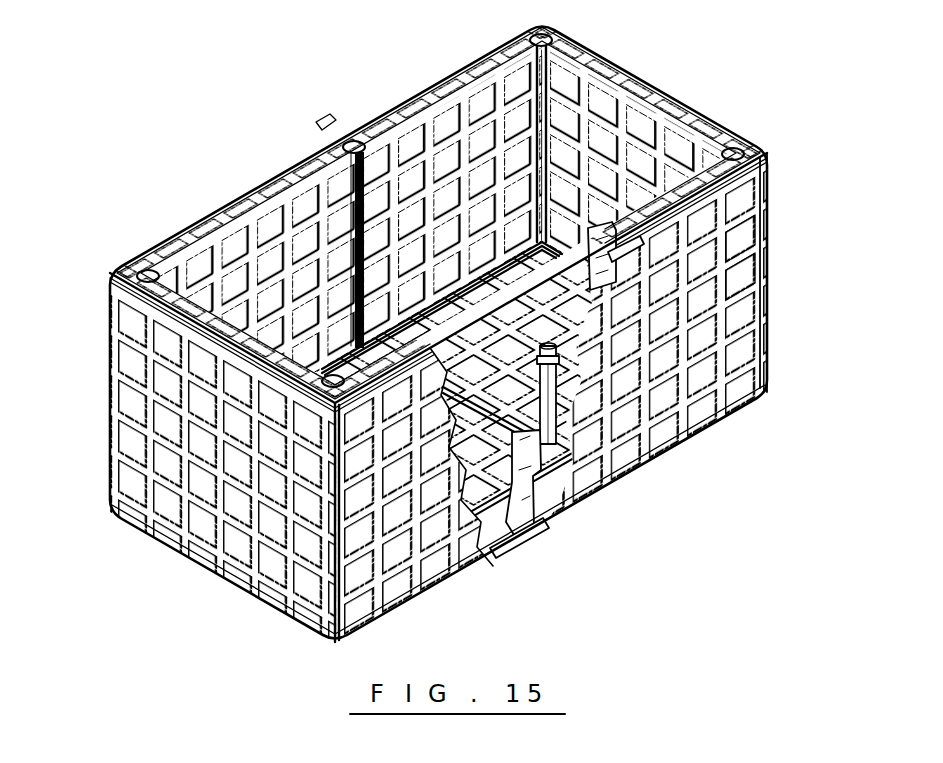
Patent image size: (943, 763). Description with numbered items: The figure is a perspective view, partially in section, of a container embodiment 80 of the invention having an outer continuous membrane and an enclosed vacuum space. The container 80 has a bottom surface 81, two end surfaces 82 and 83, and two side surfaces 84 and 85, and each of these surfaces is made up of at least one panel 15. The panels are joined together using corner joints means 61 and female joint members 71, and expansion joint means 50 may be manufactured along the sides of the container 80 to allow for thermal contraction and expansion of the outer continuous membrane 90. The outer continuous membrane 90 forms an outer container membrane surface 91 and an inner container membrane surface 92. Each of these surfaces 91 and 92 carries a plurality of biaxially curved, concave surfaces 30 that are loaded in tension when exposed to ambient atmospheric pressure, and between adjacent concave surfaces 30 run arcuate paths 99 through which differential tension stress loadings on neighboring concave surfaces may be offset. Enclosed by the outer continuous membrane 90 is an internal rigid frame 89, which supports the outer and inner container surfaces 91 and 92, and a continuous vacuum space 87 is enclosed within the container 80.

The panel 15 is at (135, 405).
The biaxially curved concave surface 30 is at (748, 230).
The expansion joint means 50 is at (343, 149).
The corner joints means 61 is at (545, 95).
The female joint member 71 is at (533, 241).
The container embodiment 80 is at (255, 108).
The bottom surface 81 is at (491, 333).
The end surface 82 is at (188, 547).
The end surface 83 is at (700, 94).
The side surface 84 is at (322, 125).
The side surface 85 is at (750, 360).
The continuous vacuum space 87 is at (545, 455).
The internal rigid frame 89 is at (505, 530).
The outer continuous membrane 90 is at (768, 205).
The outer container membrane surface 91 is at (622, 268).
The inner container membrane surface 92 is at (563, 275).
The arcuate path 99 is at (748, 258).